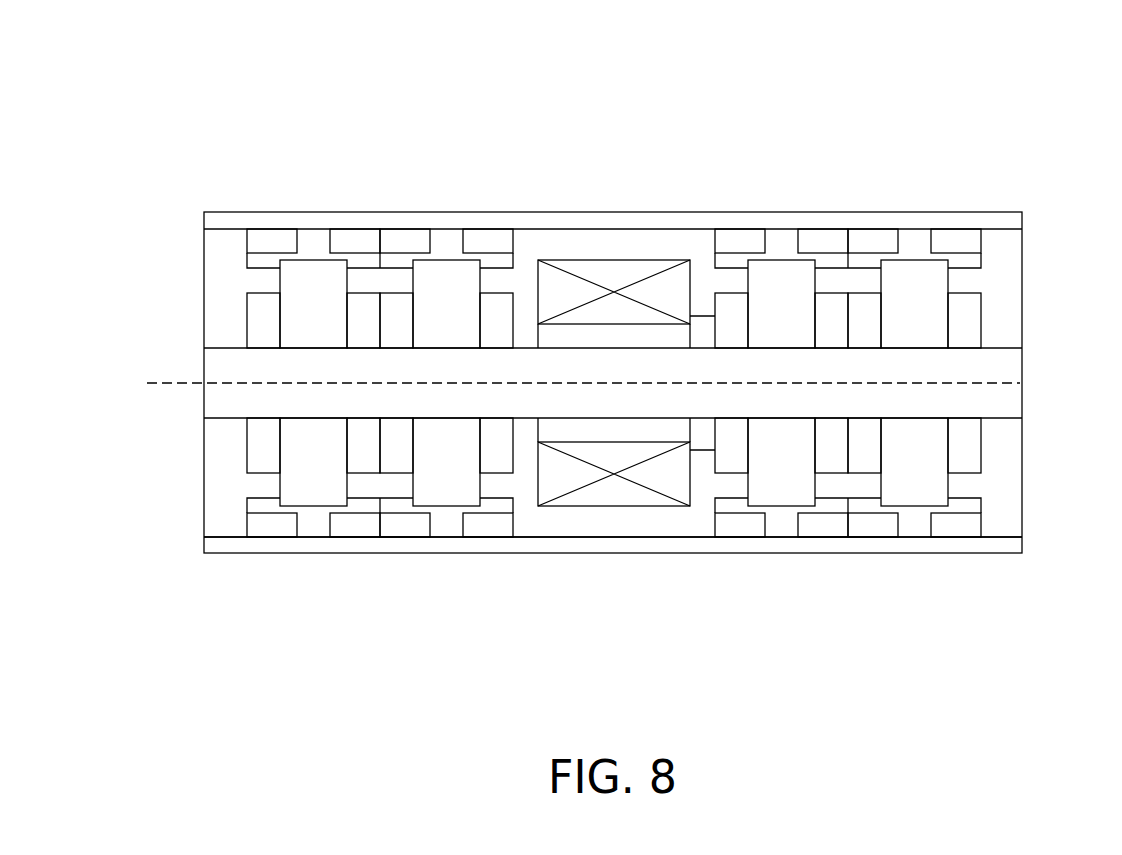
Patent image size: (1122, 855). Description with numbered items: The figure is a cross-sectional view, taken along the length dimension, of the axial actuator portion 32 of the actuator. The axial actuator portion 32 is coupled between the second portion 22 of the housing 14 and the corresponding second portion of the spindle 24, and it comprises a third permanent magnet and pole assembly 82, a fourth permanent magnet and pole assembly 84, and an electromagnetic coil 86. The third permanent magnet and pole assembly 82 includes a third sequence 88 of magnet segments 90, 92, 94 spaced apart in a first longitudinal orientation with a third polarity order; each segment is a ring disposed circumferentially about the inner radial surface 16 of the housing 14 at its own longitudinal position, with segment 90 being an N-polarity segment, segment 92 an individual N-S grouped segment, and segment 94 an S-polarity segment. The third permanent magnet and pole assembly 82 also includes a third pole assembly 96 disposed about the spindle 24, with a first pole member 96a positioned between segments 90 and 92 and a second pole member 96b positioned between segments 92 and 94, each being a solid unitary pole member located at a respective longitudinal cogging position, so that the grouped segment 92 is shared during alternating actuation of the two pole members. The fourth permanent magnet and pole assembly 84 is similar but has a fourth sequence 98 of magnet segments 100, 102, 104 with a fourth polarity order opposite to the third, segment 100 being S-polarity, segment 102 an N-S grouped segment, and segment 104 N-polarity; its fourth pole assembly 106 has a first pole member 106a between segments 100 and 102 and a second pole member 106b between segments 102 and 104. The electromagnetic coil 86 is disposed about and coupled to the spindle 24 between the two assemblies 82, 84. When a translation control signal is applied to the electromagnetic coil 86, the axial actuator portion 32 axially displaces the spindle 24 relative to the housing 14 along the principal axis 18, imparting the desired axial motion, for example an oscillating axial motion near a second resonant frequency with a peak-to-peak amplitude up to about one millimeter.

The housing 14 is at (1001, 224).
The inner radial surface 16 is at (536, 525).
The principal axis 18 is at (177, 383).
The second portion 22 is at (1031, 112).
The spindle 24 is at (1020, 365).
The axial actuator portion 32 is at (254, 177).
The third permanent magnet and pole assembly 82 is at (359, 426).
The fourth permanent magnet and pole assembly 84 is at (899, 426).
The electromagnetic coil 86 is at (613, 497).
The third sequence of magnet segments 88 is at (359, 590).
The magnet segment 90 is at (271, 577).
The second magnet segment 92 is at (330, 565).
The magnet segment 94 is at (488, 577).
The third pole assembly 96 is at (444, 268).
The first pole member 96a is at (313, 462).
The second pole member 96b is at (446, 462).
The fourth sequence of magnet segments 98 is at (899, 590).
The magnet segment 100 is at (740, 577).
The second magnet segment 102 is at (798, 565).
The magnet segment 104 is at (956, 577).
The fourth pole assembly 106 is at (916, 268).
The first pole member 106a is at (781, 462).
The second pole member 106b is at (914, 462).